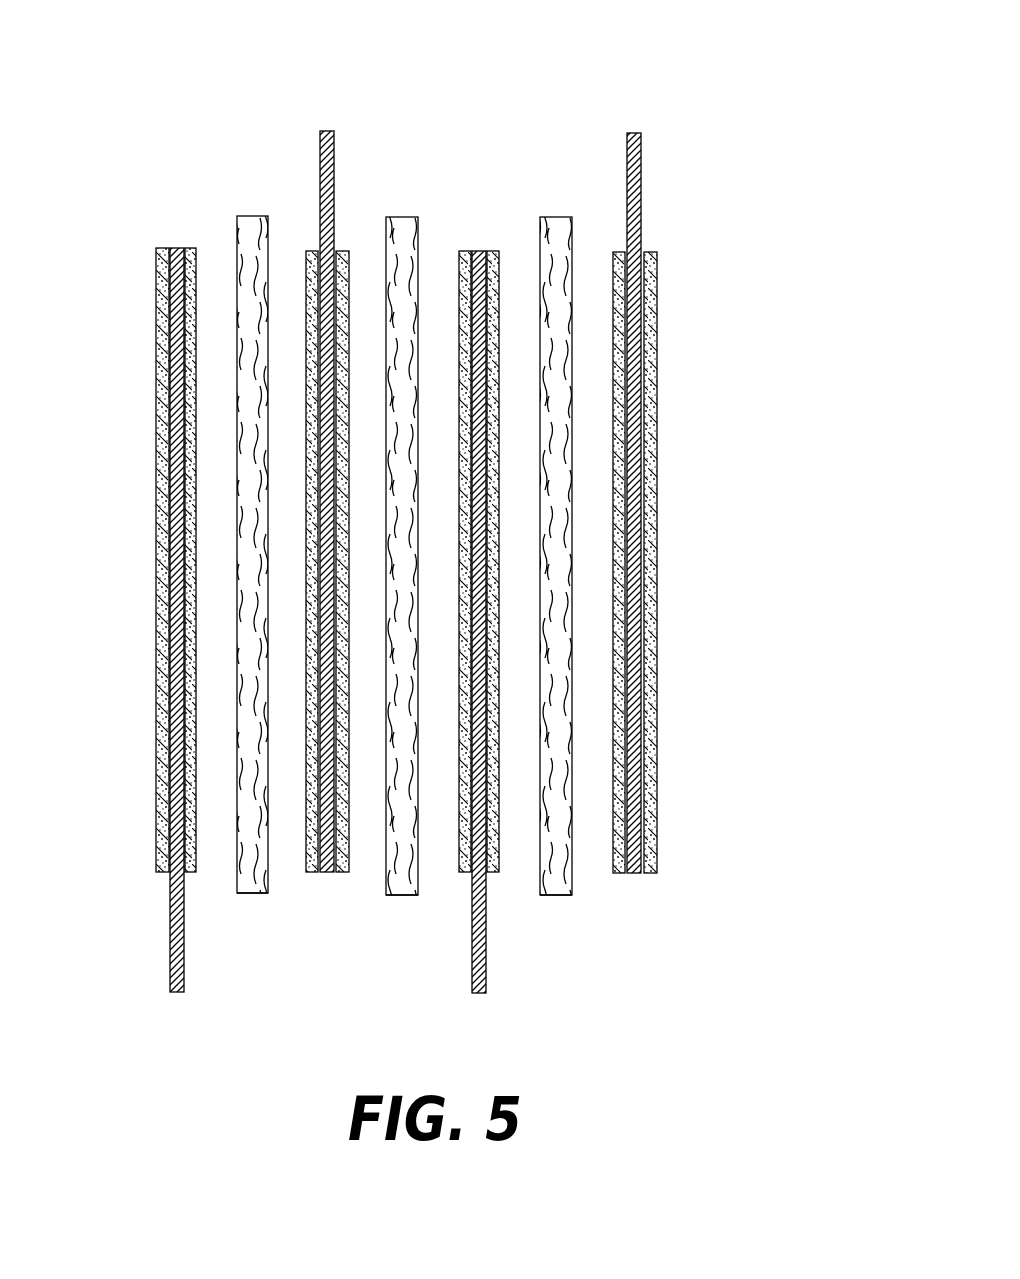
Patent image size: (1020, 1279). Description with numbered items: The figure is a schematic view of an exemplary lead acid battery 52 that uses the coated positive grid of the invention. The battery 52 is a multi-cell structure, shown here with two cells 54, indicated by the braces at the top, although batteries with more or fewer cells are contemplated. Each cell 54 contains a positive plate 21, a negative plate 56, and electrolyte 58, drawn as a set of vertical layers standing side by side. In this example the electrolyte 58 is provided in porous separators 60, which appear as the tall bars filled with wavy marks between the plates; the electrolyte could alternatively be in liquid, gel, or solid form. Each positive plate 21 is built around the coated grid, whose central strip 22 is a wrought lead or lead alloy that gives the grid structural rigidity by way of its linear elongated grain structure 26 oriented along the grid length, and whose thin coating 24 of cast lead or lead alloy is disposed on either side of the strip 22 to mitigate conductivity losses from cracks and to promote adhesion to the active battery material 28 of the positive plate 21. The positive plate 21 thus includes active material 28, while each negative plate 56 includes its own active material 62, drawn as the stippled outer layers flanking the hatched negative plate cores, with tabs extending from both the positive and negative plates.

The positive battery plate 21 is at (627, 147).
The strip 22 is at (636, 875).
The thin coating 24 is at (650, 842).
The linear elongated grain structure 26 is at (334, 150).
The active battery material 28 is at (613, 300).
The lead acid battery 52 is at (745, 566).
The cell 54 is at (390, 90).
The negative plate 56 is at (172, 963).
The electrolyte 58 is at (252, 902).
The porous separator 60 is at (238, 882).
The active material 62 is at (186, 270).